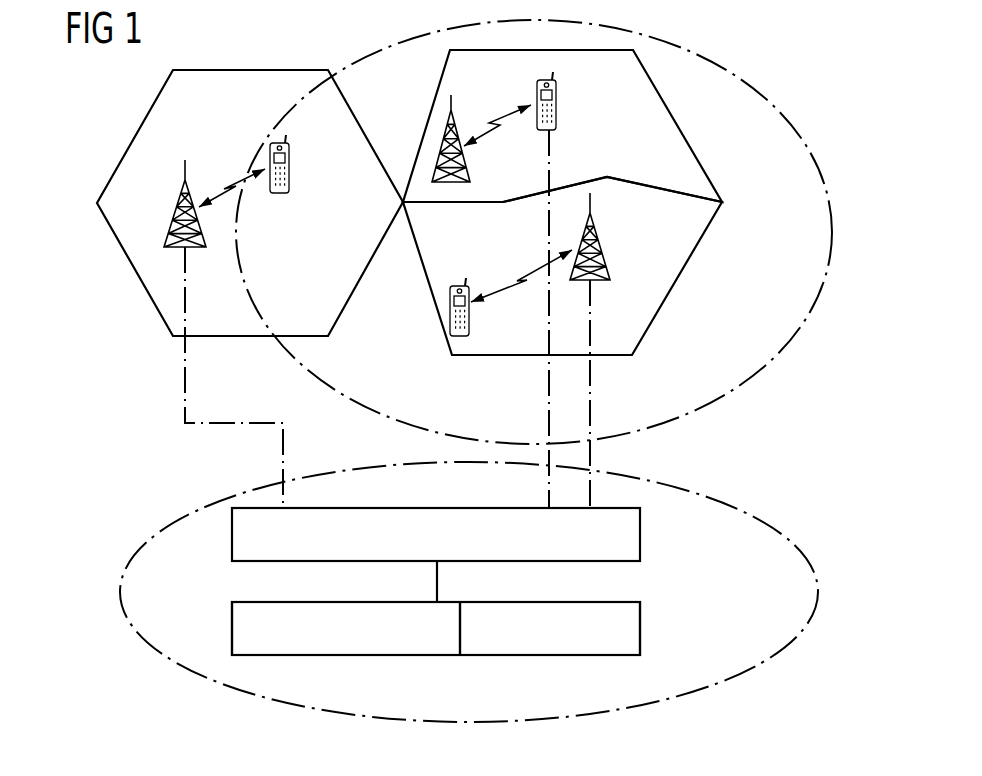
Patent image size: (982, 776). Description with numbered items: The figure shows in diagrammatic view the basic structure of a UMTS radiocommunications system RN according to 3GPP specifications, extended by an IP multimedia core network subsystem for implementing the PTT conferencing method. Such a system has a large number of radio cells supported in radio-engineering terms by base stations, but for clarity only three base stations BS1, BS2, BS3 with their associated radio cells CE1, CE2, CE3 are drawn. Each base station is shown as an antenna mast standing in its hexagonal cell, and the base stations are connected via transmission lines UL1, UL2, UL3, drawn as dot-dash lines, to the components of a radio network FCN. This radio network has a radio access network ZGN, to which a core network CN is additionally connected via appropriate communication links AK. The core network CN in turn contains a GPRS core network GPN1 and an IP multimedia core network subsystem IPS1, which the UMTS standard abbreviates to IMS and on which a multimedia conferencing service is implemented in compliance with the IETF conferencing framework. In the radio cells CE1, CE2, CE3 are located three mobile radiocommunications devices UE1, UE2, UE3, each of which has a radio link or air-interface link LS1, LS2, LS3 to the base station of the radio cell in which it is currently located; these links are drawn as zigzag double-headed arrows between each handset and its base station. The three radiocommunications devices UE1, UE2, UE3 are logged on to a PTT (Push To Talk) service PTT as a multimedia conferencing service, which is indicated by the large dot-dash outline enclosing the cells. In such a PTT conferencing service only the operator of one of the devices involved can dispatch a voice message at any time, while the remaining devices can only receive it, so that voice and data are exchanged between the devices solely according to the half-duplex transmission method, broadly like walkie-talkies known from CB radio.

The Push To Talk service PTT is at (723, 70).
The radio cell CE1 is at (133, 268).
The radio cell CE2 is at (683, 122).
The radio cell CE3 is at (683, 282).
The base station BS1 is at (200, 247).
The base station BS2 is at (466, 160).
The base station BS3 is at (602, 236).
The mobile radiocommunications device UE1 is at (289, 166).
The mobile radiocommunications device UE2 is at (556, 103).
The mobile radiocommunications device UE3 is at (469, 320).
The radio link LS1 is at (236, 178).
The radio link LS2 is at (490, 124).
The radio link LS3 is at (519, 276).
The transmission line UL1 is at (186, 376).
The transmission line UL2 is at (549, 401).
The transmission line UL3 is at (591, 394).
The UMTS radiocommunications system RN is at (232, 442).
The radio network FCN is at (755, 515).
The radio access network ZGN is at (640, 534).
The communication links AK is at (438, 580).
The core network CN is at (640, 627).
The GPRS core network GPN1 is at (346, 645).
The IP multimedia core network subsystem IPS1 is at (552, 640).